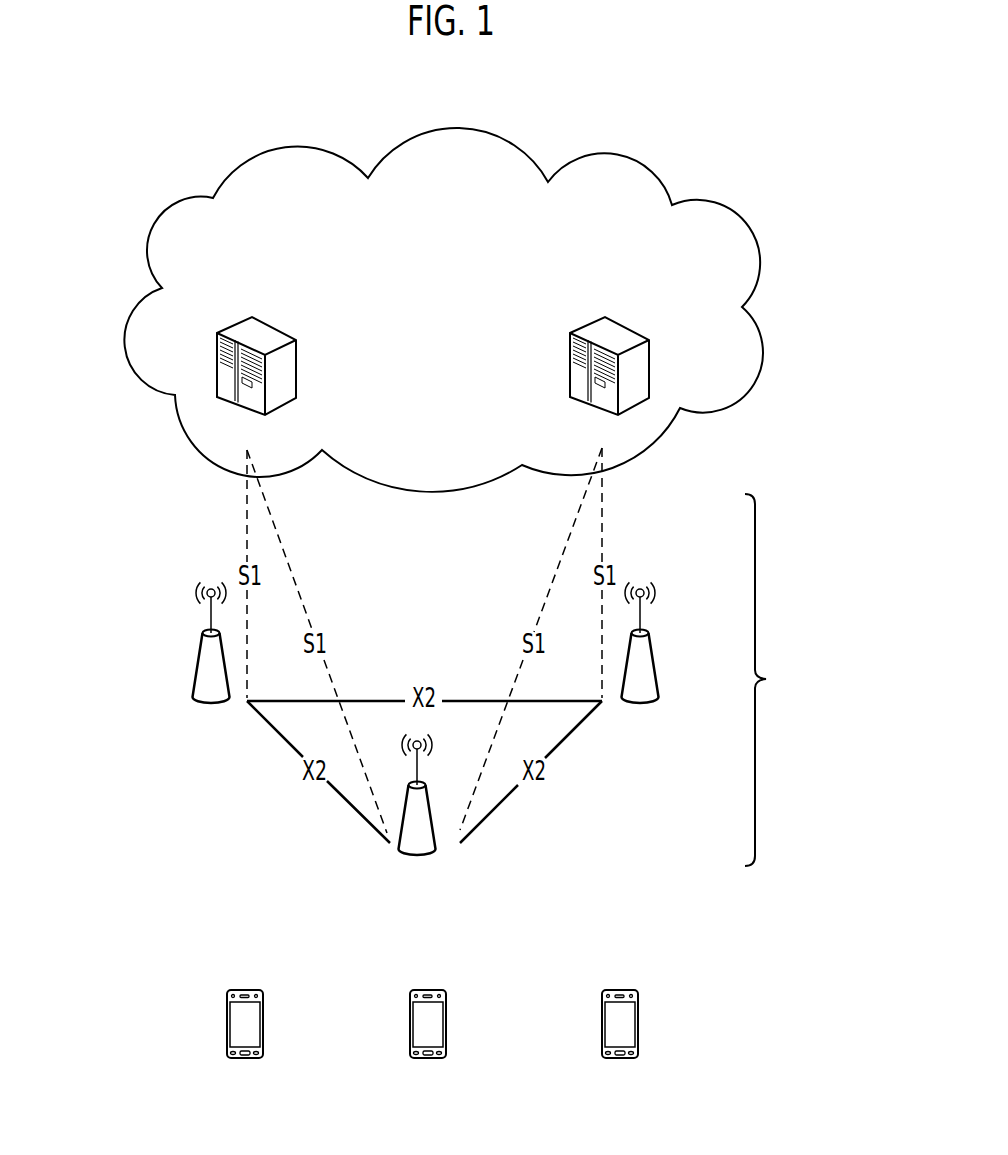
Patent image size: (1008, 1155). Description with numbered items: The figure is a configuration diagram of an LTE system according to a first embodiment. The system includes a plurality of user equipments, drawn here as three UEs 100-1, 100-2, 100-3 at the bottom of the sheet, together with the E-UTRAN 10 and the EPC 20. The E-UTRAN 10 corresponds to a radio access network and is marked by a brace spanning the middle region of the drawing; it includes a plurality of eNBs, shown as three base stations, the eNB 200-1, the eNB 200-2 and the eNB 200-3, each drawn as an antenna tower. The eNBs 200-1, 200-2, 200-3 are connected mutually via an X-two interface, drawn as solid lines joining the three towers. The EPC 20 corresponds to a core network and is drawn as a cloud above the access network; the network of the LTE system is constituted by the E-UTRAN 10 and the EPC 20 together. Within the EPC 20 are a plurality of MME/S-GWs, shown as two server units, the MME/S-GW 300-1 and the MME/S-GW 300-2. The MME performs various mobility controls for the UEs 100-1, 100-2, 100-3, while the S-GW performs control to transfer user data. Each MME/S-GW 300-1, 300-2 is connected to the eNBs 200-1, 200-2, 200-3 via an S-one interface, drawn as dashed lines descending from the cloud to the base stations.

The E-UTRAN 10 is at (806, 680).
The EPC 20 is at (650, 170).
The UE 100-1 is at (258, 990).
The UE 100-2 is at (430, 990).
The UE 100-3 is at (623, 990).
The eNB 200-1 is at (197, 667).
The eNB 200-2 is at (437, 822).
The eNB 200-3 is at (653, 648).
The MME/S-GW 300-1 is at (302, 306).
The MME/S-GW 300-2 is at (619, 326).